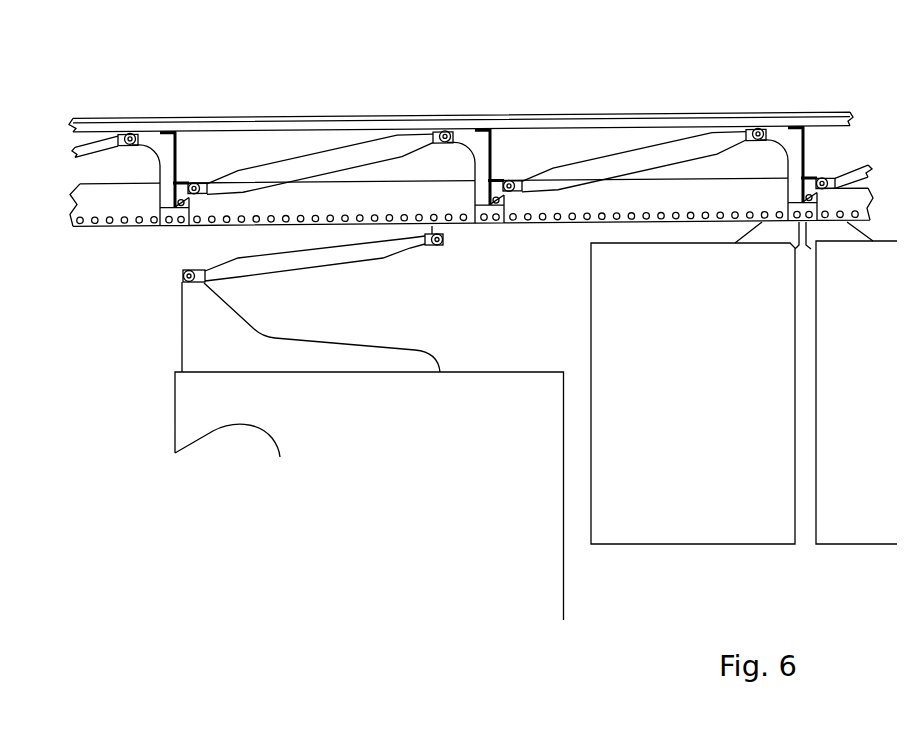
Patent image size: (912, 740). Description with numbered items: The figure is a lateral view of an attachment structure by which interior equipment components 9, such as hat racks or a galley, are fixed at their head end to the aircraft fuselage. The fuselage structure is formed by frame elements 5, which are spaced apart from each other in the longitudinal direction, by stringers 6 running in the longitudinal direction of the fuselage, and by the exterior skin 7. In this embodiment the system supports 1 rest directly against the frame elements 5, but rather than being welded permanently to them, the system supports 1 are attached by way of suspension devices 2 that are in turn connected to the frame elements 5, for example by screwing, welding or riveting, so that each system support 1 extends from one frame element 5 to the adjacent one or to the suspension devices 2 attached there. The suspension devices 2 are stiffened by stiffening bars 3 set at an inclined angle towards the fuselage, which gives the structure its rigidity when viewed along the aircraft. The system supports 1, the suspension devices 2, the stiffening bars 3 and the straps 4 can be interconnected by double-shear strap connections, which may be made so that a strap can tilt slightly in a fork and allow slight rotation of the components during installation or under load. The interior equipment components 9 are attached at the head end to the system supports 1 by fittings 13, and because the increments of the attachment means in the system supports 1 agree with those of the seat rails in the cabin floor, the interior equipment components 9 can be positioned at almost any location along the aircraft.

The system support 1 is at (370, 195).
The suspension device 2 is at (470, 137).
The stiffening bar 3 is at (625, 158).
The strap 4 is at (450, 128).
The frame element 5 is at (184, 154).
The stringer 6 is at (285, 124).
The exterior skin 7 is at (341, 118).
The interior equipment component 9 is at (710, 519).
The fitting 13 is at (203, 348).